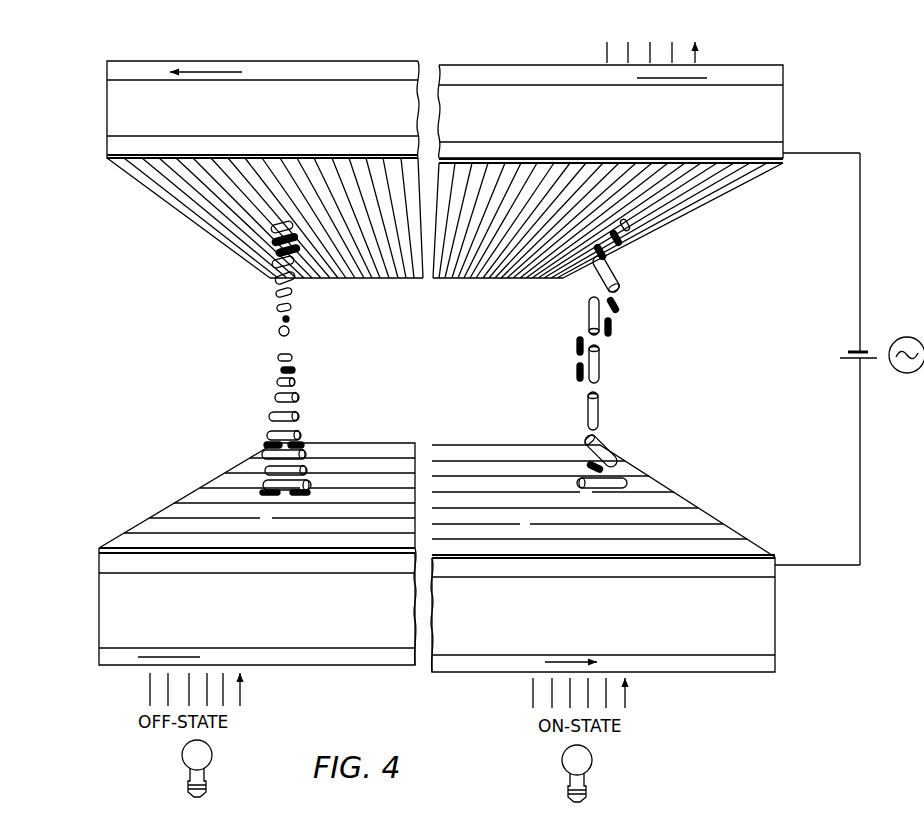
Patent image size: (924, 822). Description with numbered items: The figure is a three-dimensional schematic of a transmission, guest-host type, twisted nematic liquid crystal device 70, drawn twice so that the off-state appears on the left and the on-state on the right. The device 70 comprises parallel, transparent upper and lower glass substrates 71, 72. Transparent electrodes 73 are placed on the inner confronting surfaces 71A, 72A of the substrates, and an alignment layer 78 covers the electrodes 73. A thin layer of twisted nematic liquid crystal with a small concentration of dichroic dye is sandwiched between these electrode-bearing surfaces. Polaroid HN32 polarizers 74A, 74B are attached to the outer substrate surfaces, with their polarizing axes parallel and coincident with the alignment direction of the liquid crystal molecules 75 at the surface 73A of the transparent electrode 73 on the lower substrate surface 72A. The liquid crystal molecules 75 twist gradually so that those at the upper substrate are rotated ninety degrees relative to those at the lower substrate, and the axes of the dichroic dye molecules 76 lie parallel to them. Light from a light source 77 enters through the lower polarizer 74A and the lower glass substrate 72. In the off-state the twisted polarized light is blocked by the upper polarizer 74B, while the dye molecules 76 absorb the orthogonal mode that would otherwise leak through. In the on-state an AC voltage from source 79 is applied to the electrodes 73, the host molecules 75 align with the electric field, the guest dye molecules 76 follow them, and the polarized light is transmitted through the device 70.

The liquid crystal device 70 is at (92, 111).
The upper glass substrate 71 is at (770, 103).
The inner confronting surface of upper glass substrate 71A is at (610, 145).
The lower glass substrate 72 is at (765, 628).
The inner confronting surface of lower glass substrate 72A is at (633, 576).
The transparent electrodes 73 is at (775, 148).
The surface of transparent electrode 73A is at (720, 536).
The polarizer 74A is at (770, 665).
The polarizer 74B is at (345, 70).
The liquid crystal molecules 75 is at (272, 397).
The dichroic dye molecules 76 is at (296, 362).
The light source 77 is at (182, 751).
The alignment layer 78 is at (783, 160).
The AC voltage source 79 is at (905, 337).